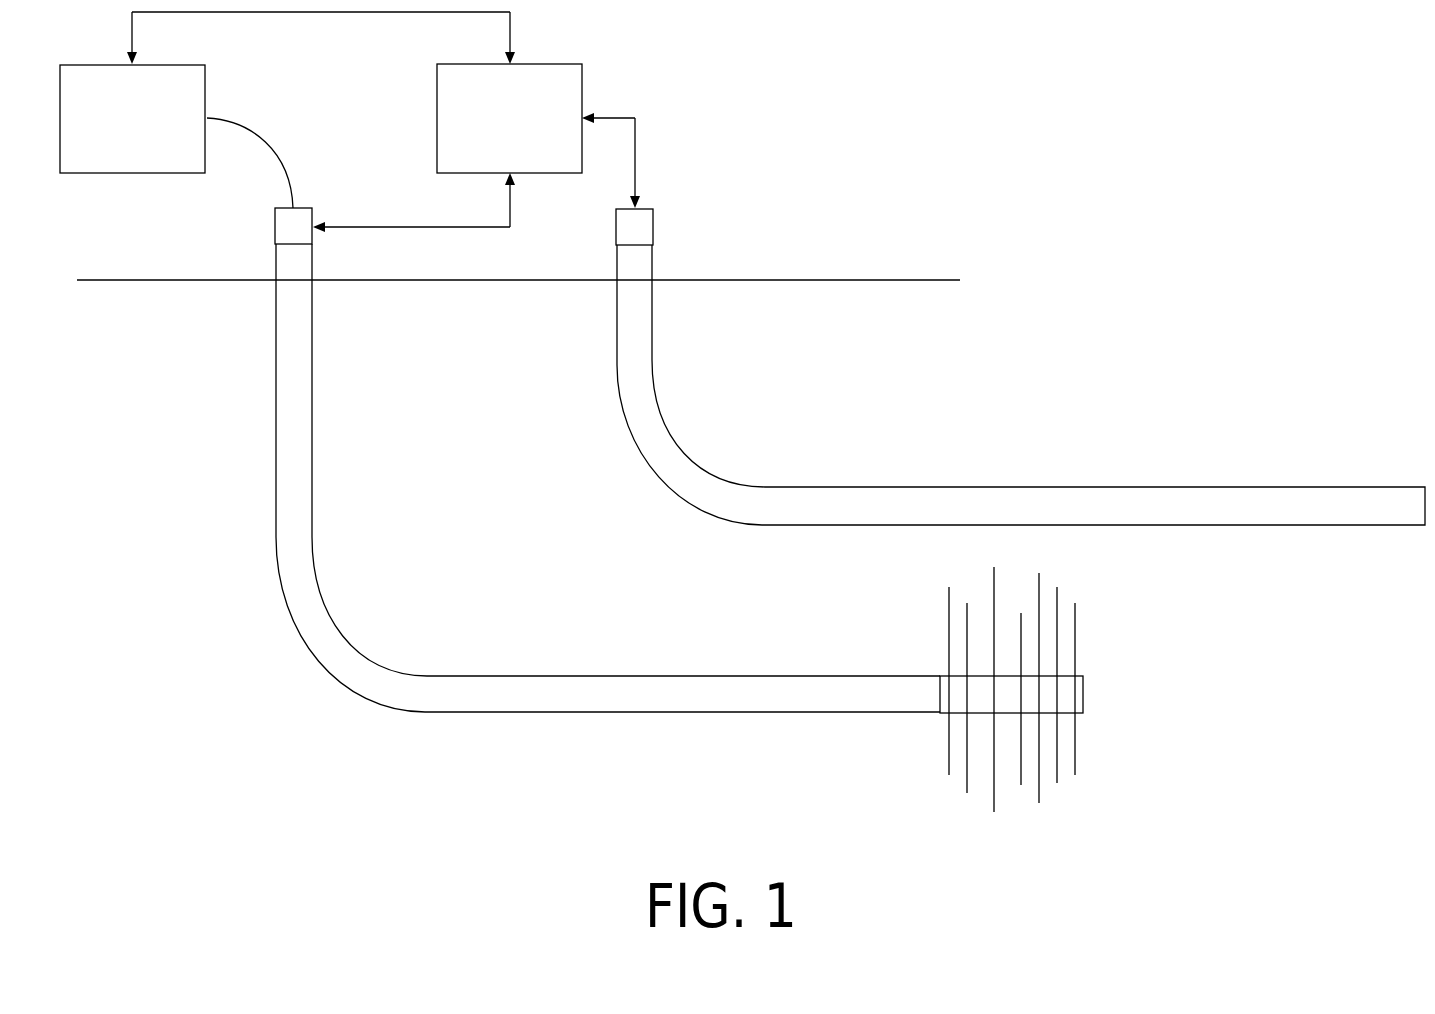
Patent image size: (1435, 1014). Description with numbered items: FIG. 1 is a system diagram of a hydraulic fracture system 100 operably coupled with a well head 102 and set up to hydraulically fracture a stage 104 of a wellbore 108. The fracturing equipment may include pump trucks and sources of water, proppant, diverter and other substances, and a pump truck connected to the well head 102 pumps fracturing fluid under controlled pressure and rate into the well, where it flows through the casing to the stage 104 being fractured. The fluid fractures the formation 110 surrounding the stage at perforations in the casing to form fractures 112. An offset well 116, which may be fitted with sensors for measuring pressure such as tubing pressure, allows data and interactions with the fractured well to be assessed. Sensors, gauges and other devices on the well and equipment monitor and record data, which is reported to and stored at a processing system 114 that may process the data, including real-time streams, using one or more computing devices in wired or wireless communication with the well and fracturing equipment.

The hydraulic fracture system 100 is at (207, 100).
The well head 102 is at (275, 228).
The stage 104 is at (1002, 707).
The wellbore 108 is at (342, 534).
The formation 110 is at (742, 617).
The fractures 112 is at (1099, 640).
The processing system 114 is at (582, 100).
The offset well 116 is at (680, 427).